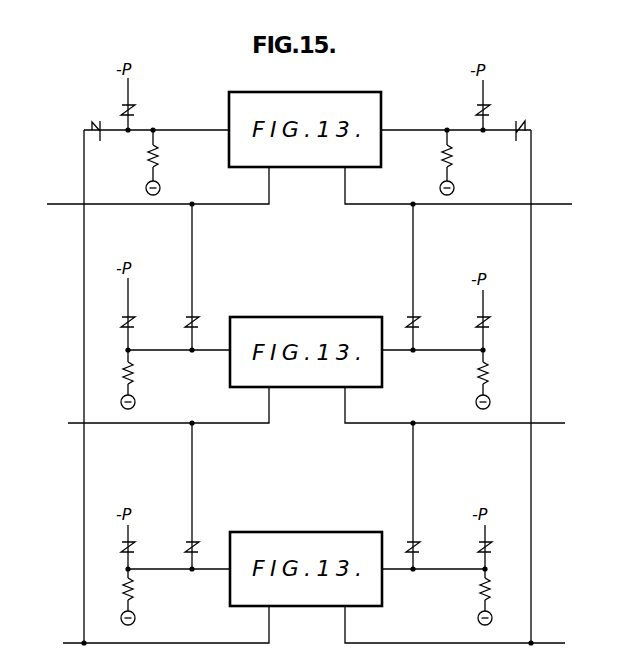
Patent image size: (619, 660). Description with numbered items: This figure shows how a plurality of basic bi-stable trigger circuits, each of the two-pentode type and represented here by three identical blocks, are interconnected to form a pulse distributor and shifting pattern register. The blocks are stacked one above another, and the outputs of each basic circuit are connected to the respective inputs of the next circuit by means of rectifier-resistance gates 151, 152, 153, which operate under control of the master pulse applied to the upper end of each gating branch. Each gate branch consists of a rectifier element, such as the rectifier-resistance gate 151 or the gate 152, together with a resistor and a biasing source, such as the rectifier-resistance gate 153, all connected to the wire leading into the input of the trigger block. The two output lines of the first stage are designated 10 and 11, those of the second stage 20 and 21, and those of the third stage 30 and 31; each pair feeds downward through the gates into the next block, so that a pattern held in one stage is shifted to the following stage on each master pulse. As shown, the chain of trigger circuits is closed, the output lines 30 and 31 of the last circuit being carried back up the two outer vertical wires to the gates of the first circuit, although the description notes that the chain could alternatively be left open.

The rectifier-resistance gate 151 is at (93, 121).
The rectifier-resistance gate 152 is at (146, 104).
The rectifier-resistance gate 153 is at (172, 162).
The output line 1-0 10 is at (152, 195).
The output line 1-1 11 is at (458, 199).
The output line 2-0 20 is at (156, 416).
The output line 2-1 21 is at (465, 416).
The output line 3-0 30 is at (151, 633).
The output line 3-1 31 is at (466, 633).